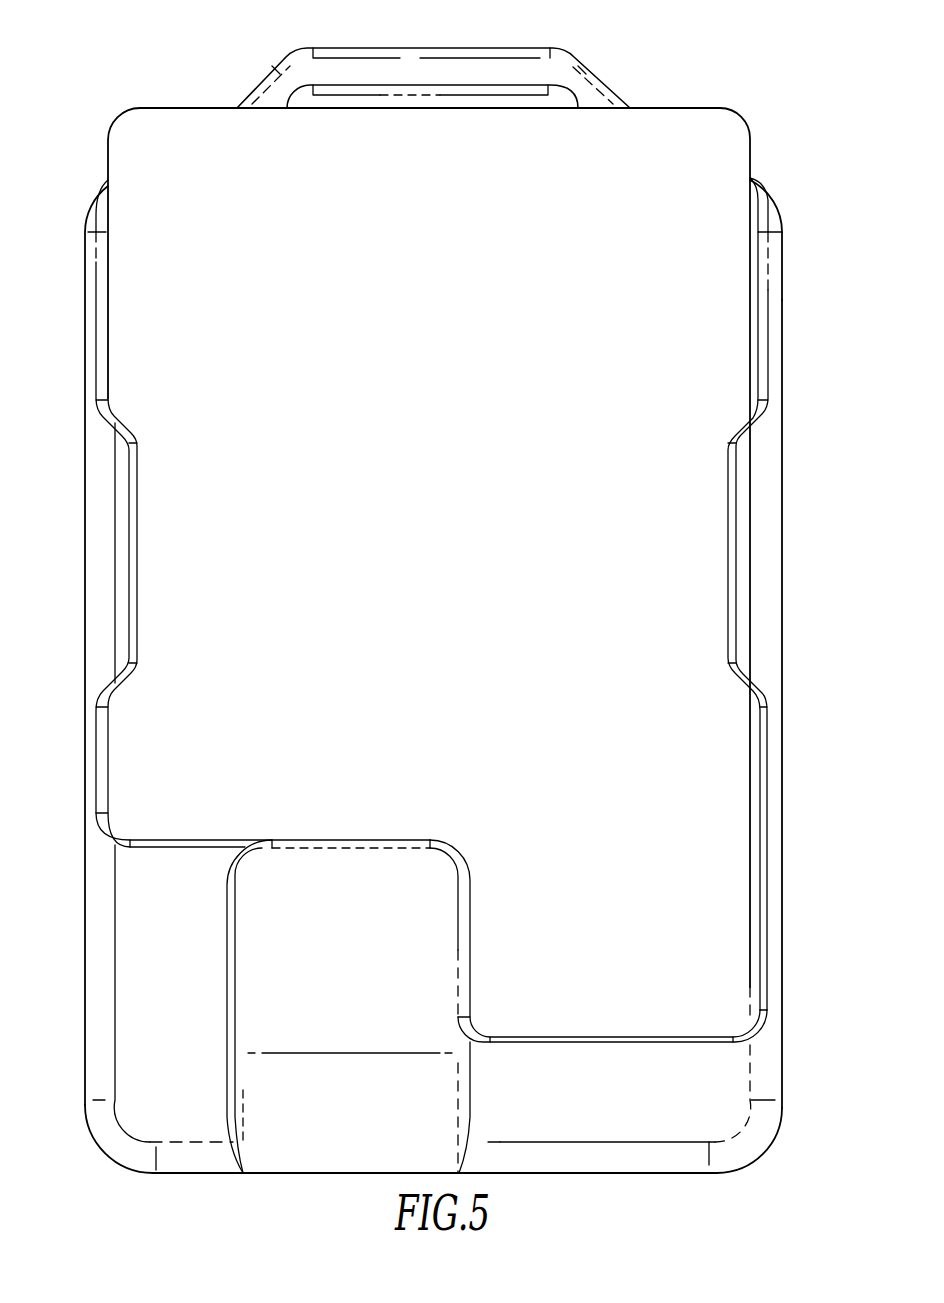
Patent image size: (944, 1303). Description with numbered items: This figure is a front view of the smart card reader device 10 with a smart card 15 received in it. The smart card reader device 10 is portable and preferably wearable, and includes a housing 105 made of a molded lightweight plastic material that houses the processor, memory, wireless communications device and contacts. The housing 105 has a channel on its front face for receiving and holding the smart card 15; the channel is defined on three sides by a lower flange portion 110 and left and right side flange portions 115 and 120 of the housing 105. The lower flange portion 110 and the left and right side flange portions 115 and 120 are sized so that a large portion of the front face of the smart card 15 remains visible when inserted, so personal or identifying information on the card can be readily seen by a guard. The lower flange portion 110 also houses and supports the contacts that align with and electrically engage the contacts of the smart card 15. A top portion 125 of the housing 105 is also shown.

The smart card reader device 10 is at (437, 590).
The smart card 15 is at (445, 359).
The housing 105 is at (780, 267).
The lower flange portion 110 is at (362, 868).
The left side flange portion 115 is at (100, 532).
The right side flange portion 120 is at (780, 527).
The top tab portion 125 is at (507, 67).